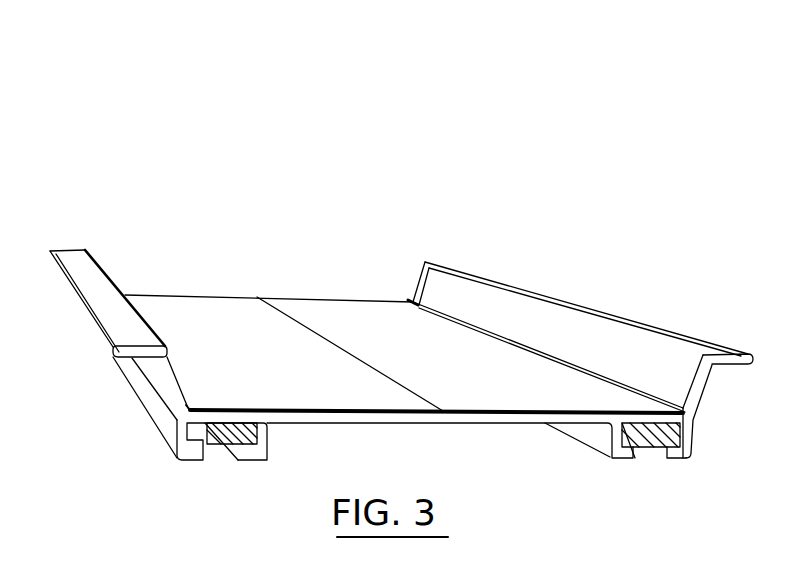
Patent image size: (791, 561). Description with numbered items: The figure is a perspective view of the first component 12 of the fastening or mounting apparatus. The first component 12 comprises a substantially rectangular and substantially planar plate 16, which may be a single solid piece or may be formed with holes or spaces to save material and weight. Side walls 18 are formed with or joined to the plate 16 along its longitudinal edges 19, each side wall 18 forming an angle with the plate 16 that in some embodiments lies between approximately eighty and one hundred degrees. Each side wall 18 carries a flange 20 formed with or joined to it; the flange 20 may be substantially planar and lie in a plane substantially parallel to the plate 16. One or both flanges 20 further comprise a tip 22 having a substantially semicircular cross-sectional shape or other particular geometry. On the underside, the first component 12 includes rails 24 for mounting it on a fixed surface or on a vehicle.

The first component 12 is at (458, 238).
The plate 16 is at (394, 354).
The side wall 18 is at (168, 366).
The longitudinal edge 19 is at (189, 410).
The flange 20 is at (73, 260).
The tip 22 is at (113, 348).
The rail 24 is at (248, 458).